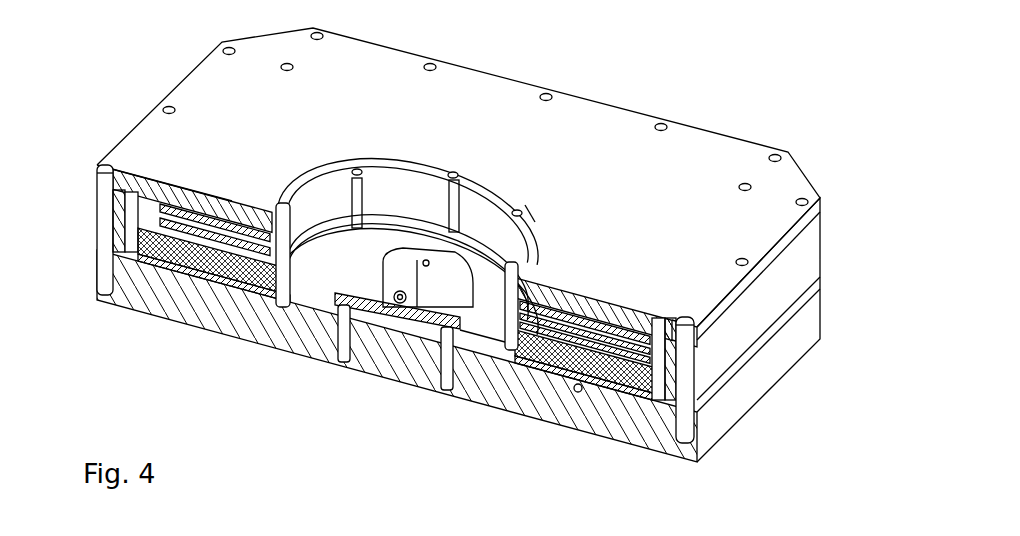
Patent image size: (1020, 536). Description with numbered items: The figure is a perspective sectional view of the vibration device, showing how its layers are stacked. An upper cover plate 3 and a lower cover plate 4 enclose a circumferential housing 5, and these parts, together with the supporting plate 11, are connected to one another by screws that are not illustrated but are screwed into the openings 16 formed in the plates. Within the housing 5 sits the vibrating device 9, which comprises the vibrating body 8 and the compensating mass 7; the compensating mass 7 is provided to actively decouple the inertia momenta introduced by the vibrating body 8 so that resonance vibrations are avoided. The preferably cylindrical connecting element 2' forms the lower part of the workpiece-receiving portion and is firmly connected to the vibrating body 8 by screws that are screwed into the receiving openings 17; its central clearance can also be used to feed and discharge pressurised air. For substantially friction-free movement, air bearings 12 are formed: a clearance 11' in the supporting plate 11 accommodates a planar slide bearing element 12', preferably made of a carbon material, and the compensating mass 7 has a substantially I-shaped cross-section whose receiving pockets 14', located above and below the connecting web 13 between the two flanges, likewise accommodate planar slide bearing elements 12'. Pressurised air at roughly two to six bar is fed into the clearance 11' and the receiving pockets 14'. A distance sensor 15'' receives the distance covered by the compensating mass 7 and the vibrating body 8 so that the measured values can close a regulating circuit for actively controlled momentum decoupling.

The connecting element 2' is at (414, 225).
The upper cover plate 3 is at (678, 157).
The lower cover plate 4 is at (660, 433).
The circumferential housing 5 is at (805, 248).
The compensating mass 7 is at (668, 343).
The vibrating body 8 is at (577, 393).
The vibrating device 9 is at (127, 213).
The supporting plate 11 is at (395, 383).
The clearance 11' is at (472, 401).
The air bearing 12 is at (395, 333).
The planar slide bearing element 12' is at (405, 319).
The connecting web 13 is at (628, 325).
The receiving pockets 14' is at (591, 291).
The distance sensor 15'' is at (366, 339).
The openings 16 is at (740, 255).
The receiving openings 17 is at (535, 200).